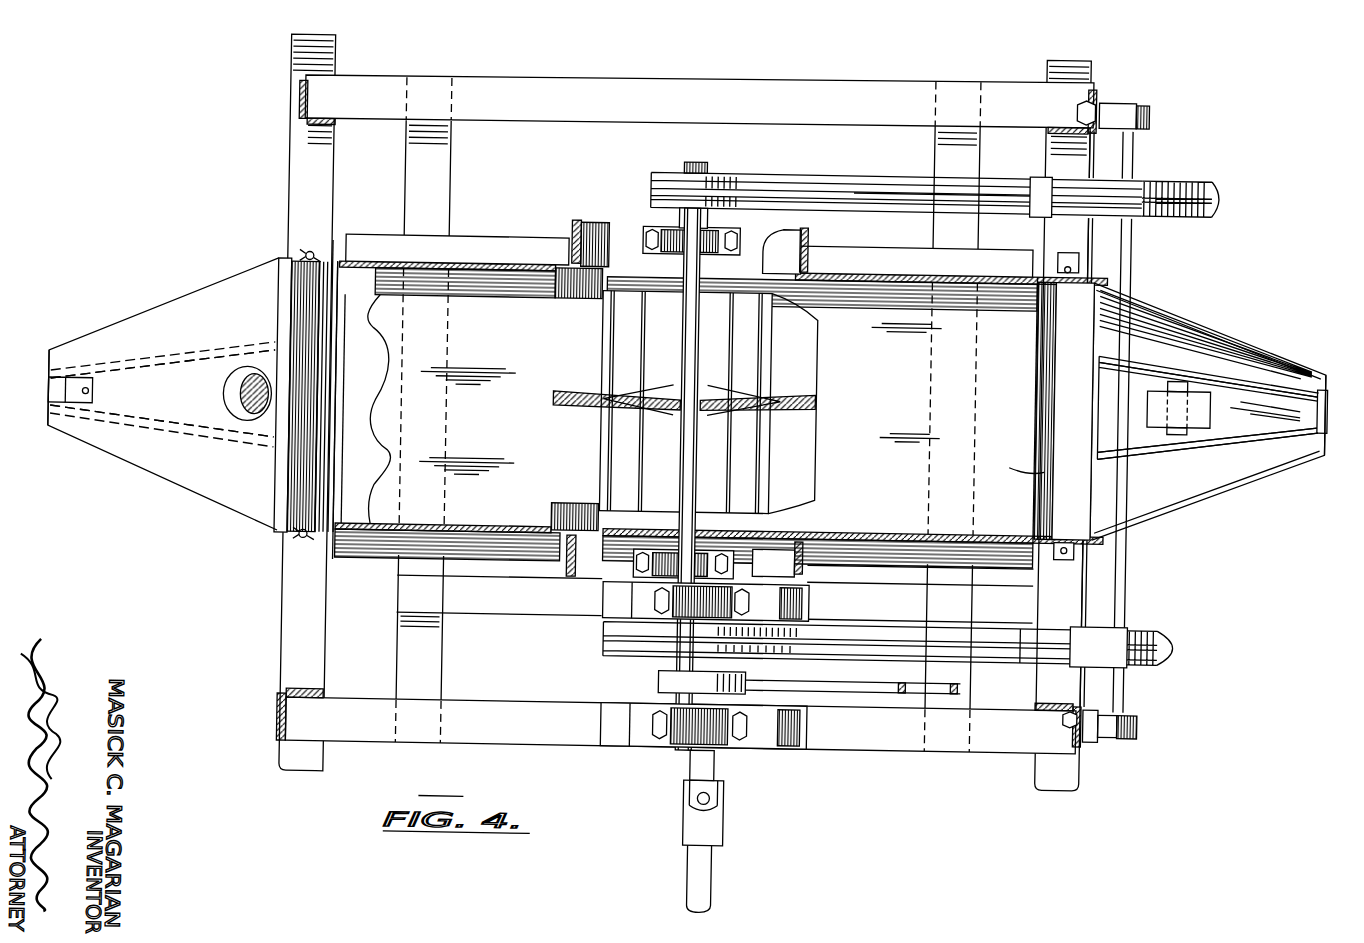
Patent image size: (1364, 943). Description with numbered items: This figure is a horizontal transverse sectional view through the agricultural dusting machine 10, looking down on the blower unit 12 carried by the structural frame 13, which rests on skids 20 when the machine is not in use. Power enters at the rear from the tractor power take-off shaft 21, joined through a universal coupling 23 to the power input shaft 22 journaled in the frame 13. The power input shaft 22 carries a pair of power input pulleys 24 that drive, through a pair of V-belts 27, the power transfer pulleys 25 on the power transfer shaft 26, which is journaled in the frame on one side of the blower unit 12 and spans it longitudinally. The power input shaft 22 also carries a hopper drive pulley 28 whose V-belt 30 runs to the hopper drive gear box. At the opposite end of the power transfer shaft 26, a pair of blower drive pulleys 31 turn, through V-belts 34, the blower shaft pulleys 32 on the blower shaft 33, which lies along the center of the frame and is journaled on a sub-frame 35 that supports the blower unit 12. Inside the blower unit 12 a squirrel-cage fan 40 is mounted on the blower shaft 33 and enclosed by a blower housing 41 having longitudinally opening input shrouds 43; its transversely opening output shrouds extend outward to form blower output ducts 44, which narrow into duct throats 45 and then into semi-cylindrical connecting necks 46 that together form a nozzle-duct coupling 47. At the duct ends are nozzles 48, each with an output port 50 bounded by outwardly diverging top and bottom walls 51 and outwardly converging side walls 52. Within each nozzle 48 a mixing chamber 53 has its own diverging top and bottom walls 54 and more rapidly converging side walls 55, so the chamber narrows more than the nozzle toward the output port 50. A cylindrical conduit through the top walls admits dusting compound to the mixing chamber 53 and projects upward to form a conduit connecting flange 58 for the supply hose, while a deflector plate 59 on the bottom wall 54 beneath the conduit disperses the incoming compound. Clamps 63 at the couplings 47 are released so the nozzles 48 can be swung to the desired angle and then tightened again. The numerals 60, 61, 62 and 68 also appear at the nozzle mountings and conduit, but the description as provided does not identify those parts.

The agricultural dusting machine 10 is at (221, 203).
The blower unit 12 is at (513, 261).
The structural frame 13 is at (292, 102).
The skids 20 is at (295, 619).
The tractor power take-off shaft 21 is at (718, 857).
The power input shaft 22 is at (701, 762).
The universal coupling 23 is at (722, 814).
The power input pulleys 24 is at (611, 649).
The power transfer pulleys 25 is at (1184, 636).
The power transfer shaft 26 is at (1123, 568).
The V-belts 27 is at (1022, 634).
The hopper drive pulley 28 is at (665, 681).
The V-belt 30 is at (885, 687).
The blower drive pulleys 31 is at (1222, 200).
The blower shaft pulleys 32 is at (646, 201).
The blower shaft 33 is at (686, 163).
The V-belts 34 is at (886, 188).
The sub-frame 35 is at (572, 230).
The squirrel-cage type fan 40 is at (815, 423).
The blower housing 41 is at (892, 259).
The input shrouds 43 is at (762, 263).
The blower output ducts 44 is at (458, 429).
The duct throats 45 is at (345, 426).
The connecting necks 46 is at (1061, 338).
The nozzle-duct coupling 47 is at (347, 398).
The nozzles 48 is at (47, 366).
The output port 50 is at (47, 431).
The nozzle top and bottom walls 51 is at (183, 309).
The nozzle side walls 52 is at (1188, 290).
The mixing chamber 53 is at (189, 354).
The mixing chamber top and bottom walls 54 is at (1131, 452).
The mixing chamber side walls 55 is at (105, 420).
The conduit connecting flange 58 is at (230, 394).
The deflector plate 59 is at (1165, 381).
The flange 60 is at (273, 502).
The bracket 61 is at (297, 269).
The wing nut 62 is at (302, 257).
The clamps 63 is at (332, 246).
The ring 68 is at (267, 383).